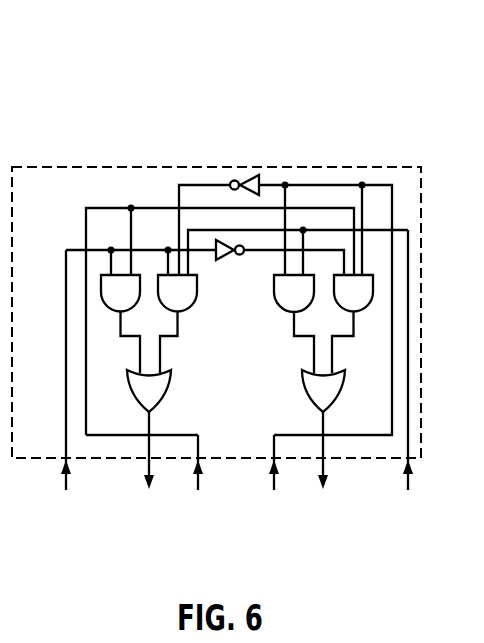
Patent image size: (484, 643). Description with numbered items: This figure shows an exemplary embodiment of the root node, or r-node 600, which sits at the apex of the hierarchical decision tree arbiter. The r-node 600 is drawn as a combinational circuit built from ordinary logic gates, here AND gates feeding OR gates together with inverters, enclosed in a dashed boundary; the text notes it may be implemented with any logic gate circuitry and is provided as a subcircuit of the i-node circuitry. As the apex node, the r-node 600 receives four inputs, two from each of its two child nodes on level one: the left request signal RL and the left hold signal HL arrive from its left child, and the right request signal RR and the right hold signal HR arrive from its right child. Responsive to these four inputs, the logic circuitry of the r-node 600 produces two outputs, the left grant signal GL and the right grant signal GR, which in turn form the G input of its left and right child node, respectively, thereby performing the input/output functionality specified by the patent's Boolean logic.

The r-node 600 is at (343, 83).
The R_L input RL is at (69, 391).
The G_L output GL is at (150, 472).
The H_L input HL is at (201, 483).
The R_R input RR is at (278, 483).
The G_R output GR is at (324, 472).
The H_R input HR is at (411, 381).